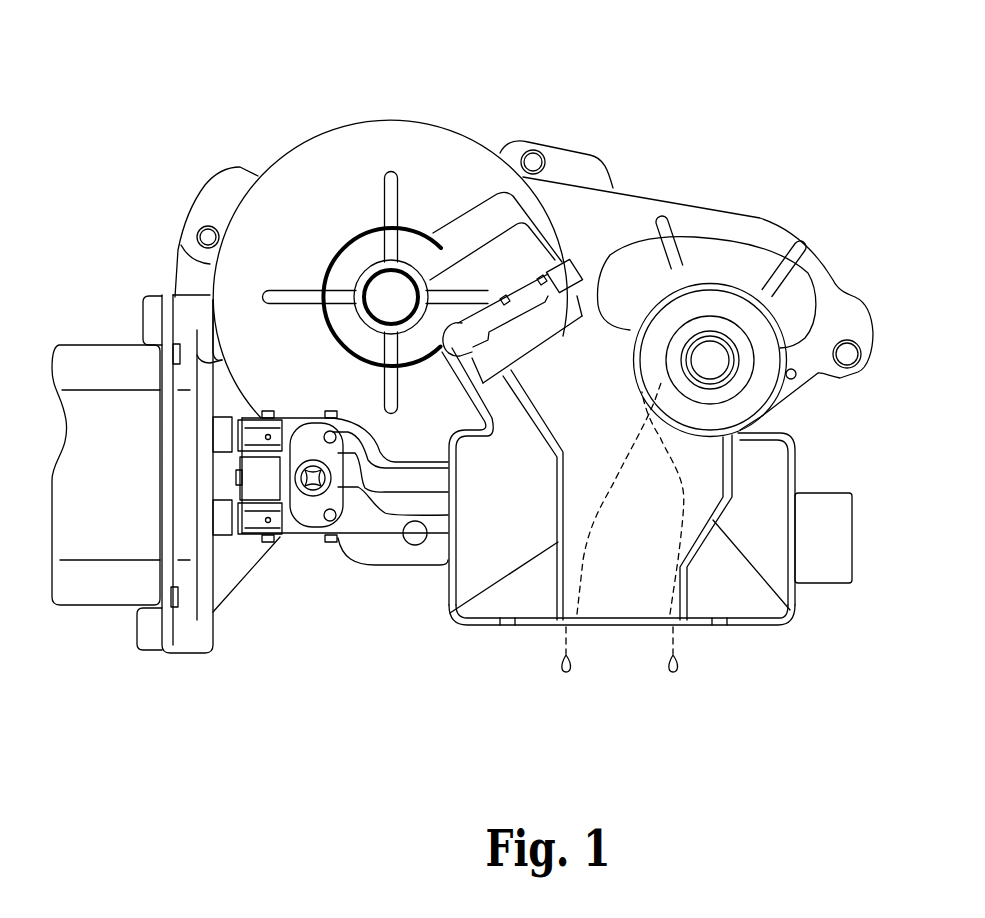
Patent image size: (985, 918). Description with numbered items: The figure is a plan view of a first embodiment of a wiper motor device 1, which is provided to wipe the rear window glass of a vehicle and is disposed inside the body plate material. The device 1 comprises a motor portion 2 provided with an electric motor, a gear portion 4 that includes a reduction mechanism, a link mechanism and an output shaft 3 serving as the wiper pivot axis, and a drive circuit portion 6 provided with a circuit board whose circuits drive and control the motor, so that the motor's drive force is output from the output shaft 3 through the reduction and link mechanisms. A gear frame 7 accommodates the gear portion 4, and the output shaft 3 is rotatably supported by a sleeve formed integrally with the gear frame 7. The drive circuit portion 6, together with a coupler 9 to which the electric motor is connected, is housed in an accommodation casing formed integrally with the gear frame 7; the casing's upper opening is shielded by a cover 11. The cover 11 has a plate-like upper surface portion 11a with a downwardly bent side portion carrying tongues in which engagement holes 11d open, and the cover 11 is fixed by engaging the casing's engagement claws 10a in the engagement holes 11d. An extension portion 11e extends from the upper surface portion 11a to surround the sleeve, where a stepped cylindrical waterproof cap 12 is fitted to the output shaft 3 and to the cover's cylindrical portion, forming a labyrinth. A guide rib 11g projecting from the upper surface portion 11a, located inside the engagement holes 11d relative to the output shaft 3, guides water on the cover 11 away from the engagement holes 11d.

The wiper motor device 1 is at (326, 84).
The motor portion 2 is at (96, 333).
The output shaft 3 is at (713, 367).
The gear portion 4 is at (647, 182).
The drive circuit portion 6 is at (774, 643).
The gear frame 7 is at (770, 237).
The coupler 9 is at (837, 528).
The engagement claws 10a is at (513, 623).
The cover 11 is at (598, 351).
The upper surface portion 11a is at (630, 597).
The engagement holes 11d is at (503, 623).
The extension portion 11e is at (763, 413).
The guide rib 11g is at (450, 608).
The waterproof cap 12 is at (742, 336).